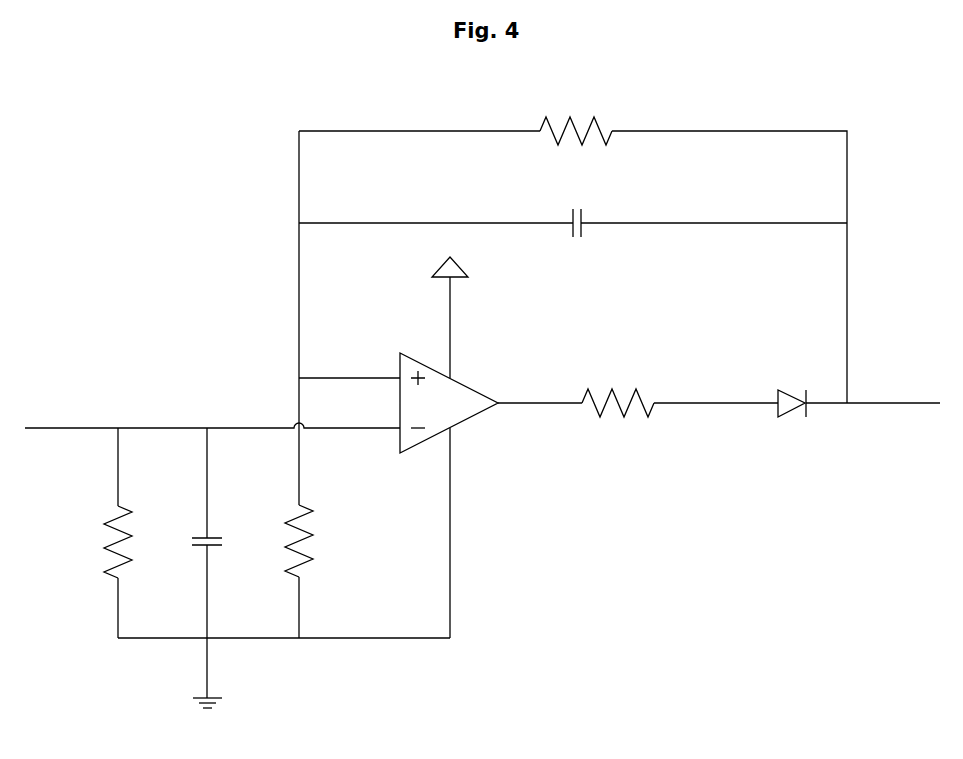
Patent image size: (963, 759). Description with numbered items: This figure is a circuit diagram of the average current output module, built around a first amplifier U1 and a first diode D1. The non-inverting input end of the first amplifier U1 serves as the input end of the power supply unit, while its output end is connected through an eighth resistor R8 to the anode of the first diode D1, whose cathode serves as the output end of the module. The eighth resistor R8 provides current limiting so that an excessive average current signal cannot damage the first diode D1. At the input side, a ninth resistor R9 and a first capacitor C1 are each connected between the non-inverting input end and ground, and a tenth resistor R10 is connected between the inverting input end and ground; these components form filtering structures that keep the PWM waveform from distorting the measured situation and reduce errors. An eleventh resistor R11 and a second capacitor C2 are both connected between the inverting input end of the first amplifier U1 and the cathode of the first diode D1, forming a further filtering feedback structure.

The first amplifier U1 is at (452, 403).
The eleventh resistor R11 is at (576, 114).
The second capacitor C2 is at (572, 211).
The eighth resistor R8 is at (618, 387).
The first diode D1 is at (791, 387).
The ninth resistor R9 is at (132, 542).
The first capacitor C1 is at (221, 545).
The tenth resistor R10 is at (318, 541).